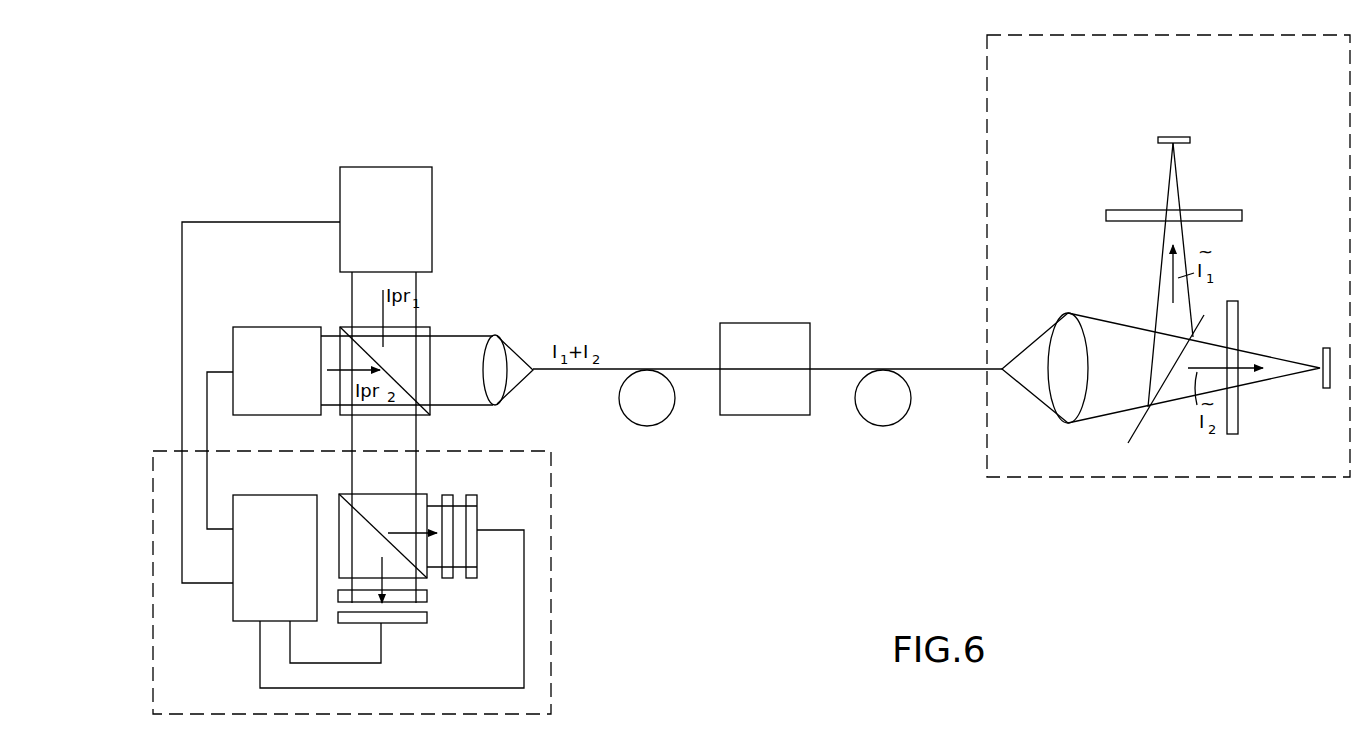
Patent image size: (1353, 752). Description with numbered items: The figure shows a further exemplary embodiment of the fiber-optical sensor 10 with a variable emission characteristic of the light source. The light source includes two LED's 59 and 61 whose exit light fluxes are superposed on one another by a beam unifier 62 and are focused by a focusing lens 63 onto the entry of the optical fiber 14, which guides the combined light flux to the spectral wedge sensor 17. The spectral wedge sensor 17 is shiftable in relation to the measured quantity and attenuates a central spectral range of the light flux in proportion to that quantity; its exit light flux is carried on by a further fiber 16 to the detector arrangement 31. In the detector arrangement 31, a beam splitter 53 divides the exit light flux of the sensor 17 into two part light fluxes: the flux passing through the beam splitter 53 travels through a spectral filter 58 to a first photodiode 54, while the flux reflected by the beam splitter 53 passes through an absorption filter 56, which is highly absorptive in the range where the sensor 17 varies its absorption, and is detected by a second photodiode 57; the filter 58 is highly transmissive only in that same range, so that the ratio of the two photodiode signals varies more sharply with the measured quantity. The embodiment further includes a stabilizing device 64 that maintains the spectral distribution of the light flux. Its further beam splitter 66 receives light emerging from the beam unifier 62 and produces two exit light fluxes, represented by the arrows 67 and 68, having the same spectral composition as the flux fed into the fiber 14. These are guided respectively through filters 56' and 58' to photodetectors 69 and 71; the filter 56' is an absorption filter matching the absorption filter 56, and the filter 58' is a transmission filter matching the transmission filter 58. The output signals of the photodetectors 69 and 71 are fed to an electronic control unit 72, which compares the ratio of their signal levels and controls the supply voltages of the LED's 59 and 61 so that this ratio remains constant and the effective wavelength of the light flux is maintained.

The fiber-optical sensor 10 is at (833, 270).
The optical fiber 14 is at (686, 368).
The optical fiber coil 16 is at (851, 368).
The spectral wedge sensor 17 is at (754, 337).
The detector arrangement 31 is at (990, 282).
The beam splitter 53 is at (1143, 425).
The first photodiode 54 is at (1326, 348).
The absorption filter 56 is at (1180, 194).
The second photodiode 57 is at (1182, 137).
The spectral filter 58 is at (1256, 357).
The LED 59 is at (425, 225).
The LED 61 is at (292, 347).
The beam unifier 62 is at (425, 330).
The focusing lens 63 is at (497, 347).
The stabilizing device 64 is at (540, 530).
The further beam splitter 66 is at (345, 513).
The exit light flux arrow 67 is at (405, 520).
The exit light flux arrow 68 is at (367, 573).
The photodetector 69 is at (474, 508).
The spectral filter 56' is at (467, 515).
The filter 58' is at (409, 610).
The photodetector 71 is at (405, 616).
The electronic control unit 72 is at (238, 600).